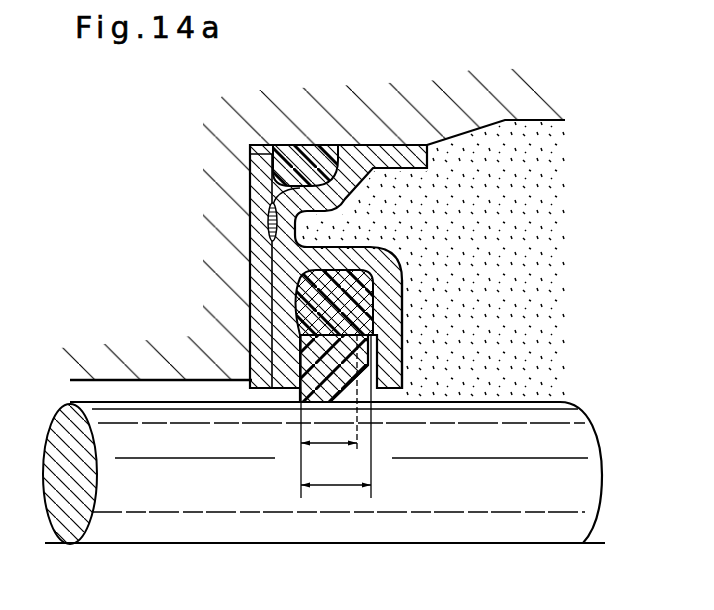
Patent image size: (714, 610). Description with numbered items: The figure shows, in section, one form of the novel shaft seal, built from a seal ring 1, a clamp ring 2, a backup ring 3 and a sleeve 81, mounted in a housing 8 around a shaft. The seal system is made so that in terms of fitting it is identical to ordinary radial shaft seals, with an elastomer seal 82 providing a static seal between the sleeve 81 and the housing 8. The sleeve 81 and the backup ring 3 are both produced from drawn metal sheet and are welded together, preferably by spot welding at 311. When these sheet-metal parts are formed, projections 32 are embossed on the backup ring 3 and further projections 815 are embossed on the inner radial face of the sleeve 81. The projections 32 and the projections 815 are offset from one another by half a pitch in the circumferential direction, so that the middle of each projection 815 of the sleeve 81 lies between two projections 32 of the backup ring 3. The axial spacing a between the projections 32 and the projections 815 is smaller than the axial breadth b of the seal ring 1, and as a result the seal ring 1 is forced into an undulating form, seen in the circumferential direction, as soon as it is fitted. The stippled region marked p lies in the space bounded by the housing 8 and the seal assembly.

The seal ring 1 is at (250, 358).
The clamp ring 2 is at (300, 298).
The backup ring 3 is at (256, 244).
The housing 8 is at (410, 119).
The projections 32 is at (312, 362).
The sleeve 81 is at (303, 258).
The elastomer seal 82 is at (293, 165).
The spot welding 311 is at (262, 220).
The projections 815 is at (400, 355).
The pressure medium p is at (502, 240).
The axial spacing a is at (330, 443).
The axial breadth b is at (330, 485).